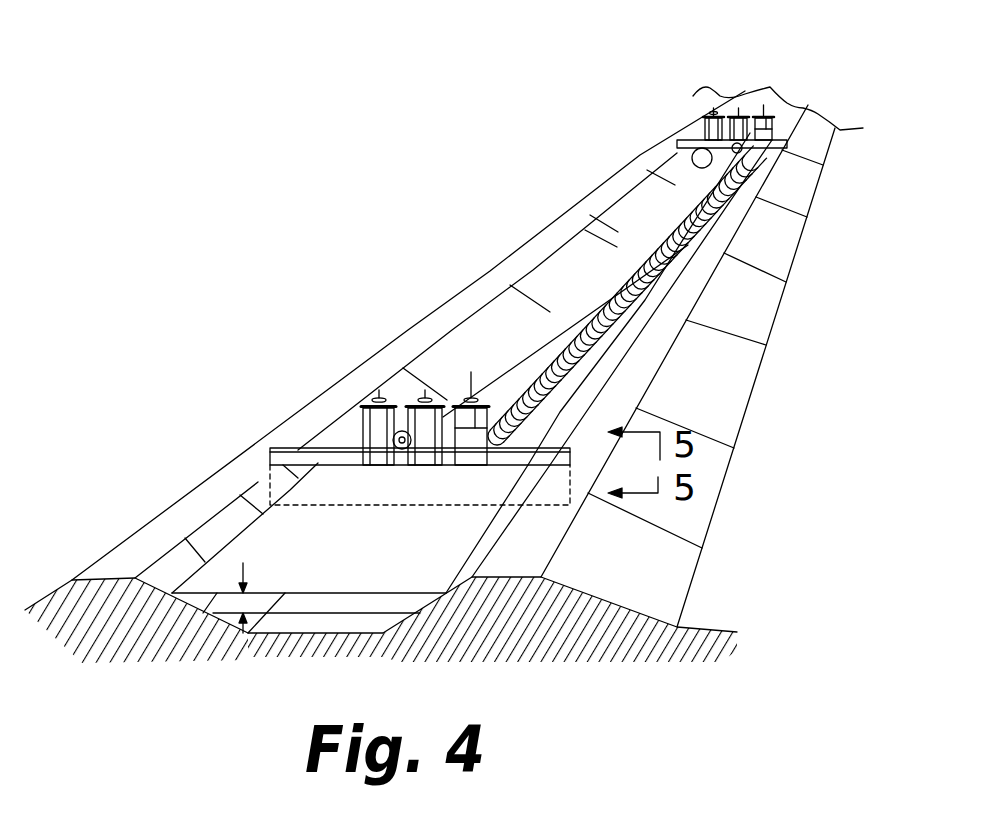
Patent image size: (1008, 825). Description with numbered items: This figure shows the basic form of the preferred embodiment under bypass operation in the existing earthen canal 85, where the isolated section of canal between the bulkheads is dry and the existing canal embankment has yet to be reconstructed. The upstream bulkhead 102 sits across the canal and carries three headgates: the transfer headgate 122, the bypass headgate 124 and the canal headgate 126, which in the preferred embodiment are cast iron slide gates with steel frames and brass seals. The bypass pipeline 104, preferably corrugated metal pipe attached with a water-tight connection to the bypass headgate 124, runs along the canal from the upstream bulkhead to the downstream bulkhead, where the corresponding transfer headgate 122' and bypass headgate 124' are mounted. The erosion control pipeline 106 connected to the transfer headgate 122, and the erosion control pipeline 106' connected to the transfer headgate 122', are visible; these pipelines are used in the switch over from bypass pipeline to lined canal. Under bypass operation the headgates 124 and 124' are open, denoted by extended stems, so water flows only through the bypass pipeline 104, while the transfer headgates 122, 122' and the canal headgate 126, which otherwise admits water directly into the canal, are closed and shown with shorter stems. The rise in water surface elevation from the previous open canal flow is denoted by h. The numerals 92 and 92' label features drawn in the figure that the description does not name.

The irrigation ditch 92 is at (385, 377).
The irrigation ditch far end 92' is at (778, 77).
The existing earthen canal 85 is at (560, 232).
The upstream bulkhead 102 is at (292, 447).
The bypass pipeline 104 is at (776, 312).
The erosion control pipeline 106 is at (385, 364).
The erosion control pipeline 106' is at (657, 149).
The transfer headgate 122 is at (354, 390).
The bypass headgate 124 is at (490, 383).
The canal headgate 126 is at (445, 404).
The transfer headgate 122' is at (662, 108).
The bypass headgate 124' is at (816, 164).